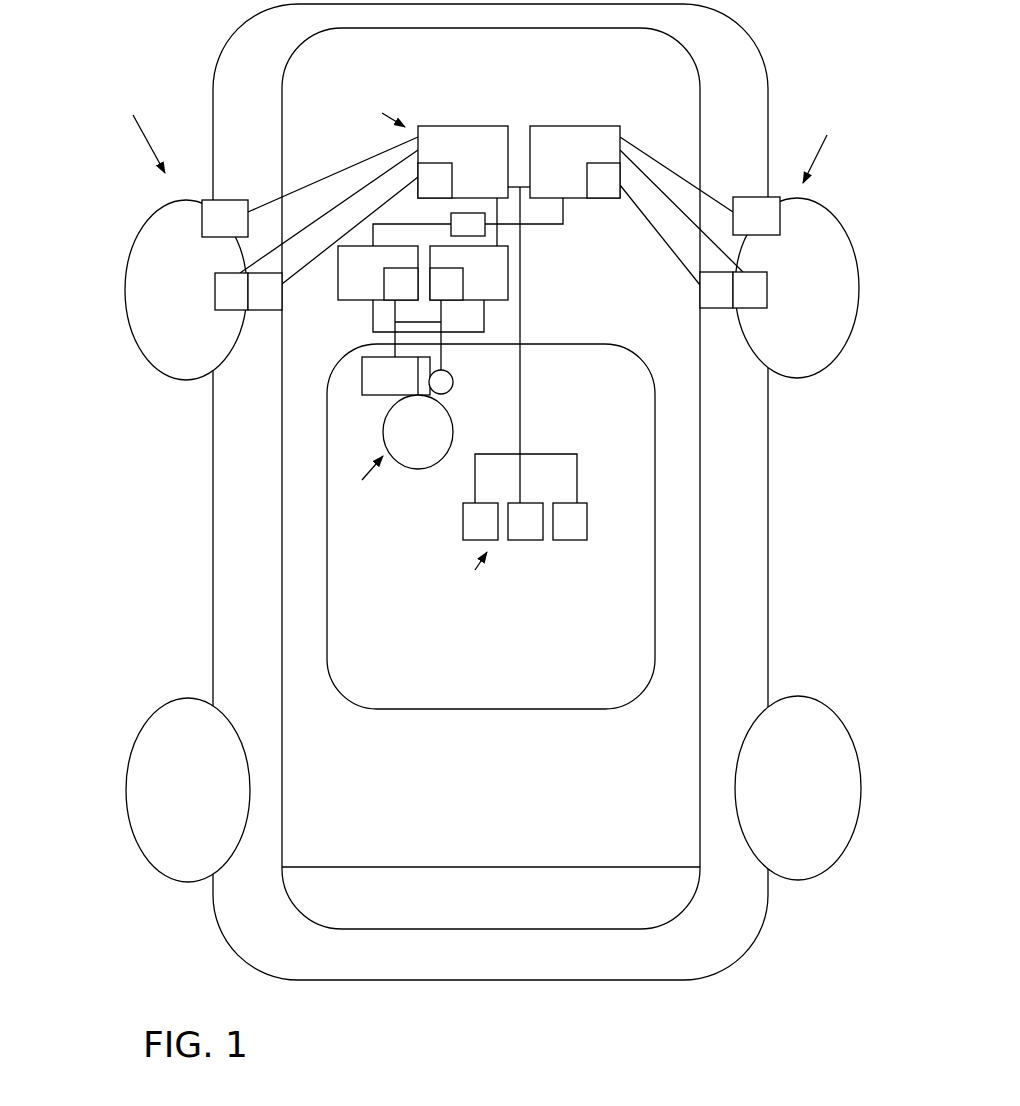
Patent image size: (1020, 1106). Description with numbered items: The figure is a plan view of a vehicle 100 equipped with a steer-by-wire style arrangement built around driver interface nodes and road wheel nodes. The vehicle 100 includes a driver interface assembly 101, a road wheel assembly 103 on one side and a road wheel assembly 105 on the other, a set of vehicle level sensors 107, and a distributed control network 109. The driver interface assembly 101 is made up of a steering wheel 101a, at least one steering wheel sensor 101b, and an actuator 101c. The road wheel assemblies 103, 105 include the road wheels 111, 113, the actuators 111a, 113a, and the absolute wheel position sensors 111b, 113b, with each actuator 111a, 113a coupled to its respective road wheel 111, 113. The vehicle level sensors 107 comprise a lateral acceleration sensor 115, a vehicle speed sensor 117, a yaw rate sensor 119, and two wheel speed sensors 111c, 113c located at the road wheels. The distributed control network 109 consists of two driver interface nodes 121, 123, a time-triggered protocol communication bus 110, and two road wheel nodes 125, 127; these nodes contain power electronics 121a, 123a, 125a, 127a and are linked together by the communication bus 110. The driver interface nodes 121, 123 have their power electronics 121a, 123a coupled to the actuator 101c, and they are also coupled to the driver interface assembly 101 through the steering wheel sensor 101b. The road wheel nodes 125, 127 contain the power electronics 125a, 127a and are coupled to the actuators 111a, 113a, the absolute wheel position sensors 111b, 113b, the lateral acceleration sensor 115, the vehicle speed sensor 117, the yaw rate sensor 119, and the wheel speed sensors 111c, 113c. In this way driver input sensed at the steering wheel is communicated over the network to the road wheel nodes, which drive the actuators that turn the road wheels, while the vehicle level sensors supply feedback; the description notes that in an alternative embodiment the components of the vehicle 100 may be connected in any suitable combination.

The vehicle 100 is at (500, 85).
The driver interface assembly 101 is at (376, 512).
The steering wheel 101a is at (452, 417).
The steering wheel sensor 101b is at (453, 382).
The actuator 101c is at (376, 375).
The road wheel assembly 103 is at (125, 118).
The road wheel assembly 105 is at (849, 133).
The vehicle level sensors 107 is at (497, 607).
The distributed control network 109 is at (491, 293).
The time-triggered protocol (TTP) communication bus 110 is at (457, 234).
The road wheel 111 is at (172, 283).
The actuator 111a is at (251, 300).
The absolute wheel position sensor 111b is at (245, 300).
The wheel speed sensor 111c is at (225, 218).
The road wheel 113 is at (783, 281).
The actuator 113a is at (730, 298).
The absolute wheel position sensor 113b is at (736, 298).
The wheel speed sensor 113c is at (743, 225).
The lateral acceleration sensor 115 is at (469, 530).
The vehicle speed sensor 117 is at (559, 530).
The yaw rate sensor 119 is at (514, 530).
The driver interface node 121 is at (348, 286).
The power electronics 121a is at (387, 290).
The driver interface node 123 is at (501, 286).
The power electronics 123a is at (460, 294).
The road wheel node 125 is at (487, 173).
The power electronics 125a is at (421, 190).
The road wheel node 127 is at (546, 173).
The power electronics 127a is at (589, 190).